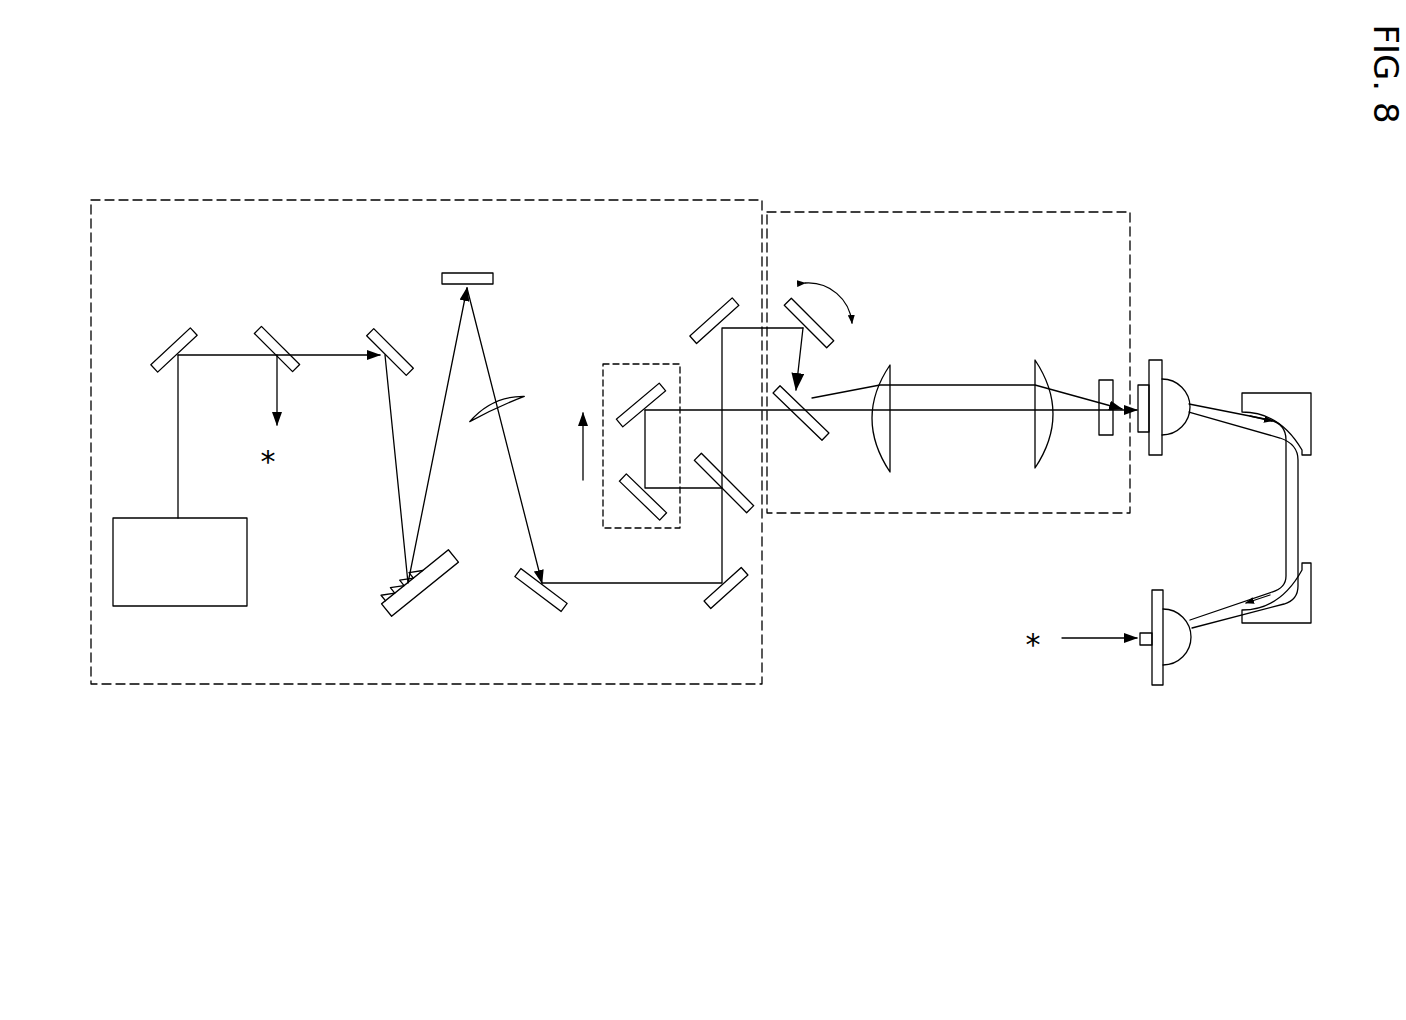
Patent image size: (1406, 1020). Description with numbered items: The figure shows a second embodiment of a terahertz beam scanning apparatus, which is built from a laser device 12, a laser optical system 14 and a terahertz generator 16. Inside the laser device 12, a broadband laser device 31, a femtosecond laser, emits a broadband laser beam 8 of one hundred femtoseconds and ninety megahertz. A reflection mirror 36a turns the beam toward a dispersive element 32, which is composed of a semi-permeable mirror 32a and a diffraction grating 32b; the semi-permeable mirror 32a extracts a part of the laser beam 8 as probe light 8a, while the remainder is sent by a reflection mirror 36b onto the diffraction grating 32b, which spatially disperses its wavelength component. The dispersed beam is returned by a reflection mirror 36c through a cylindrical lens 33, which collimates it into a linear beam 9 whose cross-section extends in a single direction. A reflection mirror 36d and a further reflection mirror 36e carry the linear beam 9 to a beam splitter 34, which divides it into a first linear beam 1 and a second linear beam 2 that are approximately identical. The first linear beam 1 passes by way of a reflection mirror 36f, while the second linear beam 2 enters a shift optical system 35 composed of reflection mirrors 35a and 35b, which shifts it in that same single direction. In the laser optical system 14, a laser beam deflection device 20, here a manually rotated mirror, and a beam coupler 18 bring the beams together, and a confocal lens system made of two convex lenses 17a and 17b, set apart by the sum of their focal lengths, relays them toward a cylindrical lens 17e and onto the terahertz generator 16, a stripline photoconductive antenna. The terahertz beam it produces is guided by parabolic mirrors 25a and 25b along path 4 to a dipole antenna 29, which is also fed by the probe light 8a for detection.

The laser device 12 is at (337, 198).
The laser optical system 14 is at (1085, 210).
The dispersive element 32 is at (238, 294).
The reflection mirror 36a is at (177, 345).
The semi-permeable mirror 32a is at (268, 343).
The probe light 8a is at (1072, 637).
The reflection mirror 36b is at (382, 340).
The reflection mirror 36c is at (475, 275).
The cylindrical lens 33 is at (507, 400).
The diffraction grating 32b is at (418, 586).
The linear beam 9 is at (518, 500).
The reflection mirror 36d is at (547, 606).
The shift optical system 35 is at (623, 360).
The reflection mirror 35b is at (637, 405).
The reflection mirror 35a is at (632, 490).
The reflection mirror 36f is at (717, 318).
The beam splitter 34 is at (747, 503).
The reflection mirror 36e is at (718, 603).
The first linear beam 1 is at (722, 372).
The second linear beam 2 is at (697, 492).
The laser beam deflection device 20 is at (830, 302).
The beam coupler 18 is at (810, 423).
The convex lens 17a is at (888, 450).
The convex lens 17b is at (1040, 438).
The cylindrical lens 17e is at (1106, 385).
The terahertz generator 16 is at (1170, 385).
The parabolic mirror 25a is at (1285, 400).
The parabolic mirror 25b is at (1290, 624).
The optical fiber 4 is at (1270, 428).
The dipole antenna 29 is at (1170, 665).
The broadband laser beam 8 is at (177, 460).
The broadband laser device 31 is at (200, 578).